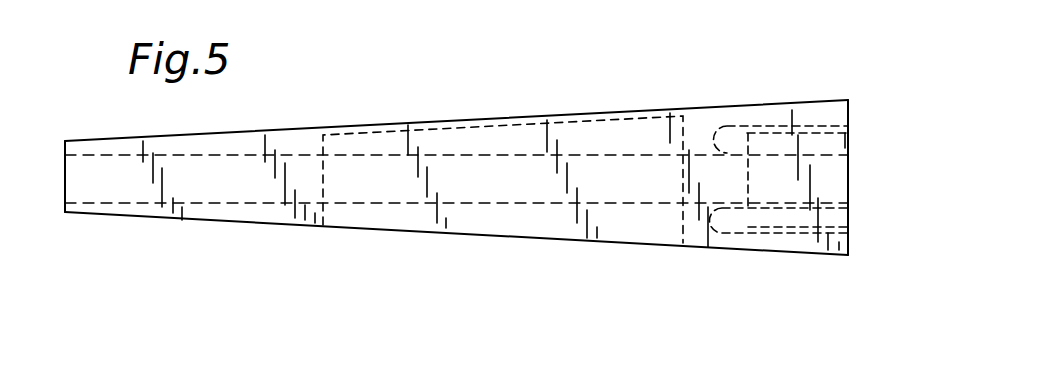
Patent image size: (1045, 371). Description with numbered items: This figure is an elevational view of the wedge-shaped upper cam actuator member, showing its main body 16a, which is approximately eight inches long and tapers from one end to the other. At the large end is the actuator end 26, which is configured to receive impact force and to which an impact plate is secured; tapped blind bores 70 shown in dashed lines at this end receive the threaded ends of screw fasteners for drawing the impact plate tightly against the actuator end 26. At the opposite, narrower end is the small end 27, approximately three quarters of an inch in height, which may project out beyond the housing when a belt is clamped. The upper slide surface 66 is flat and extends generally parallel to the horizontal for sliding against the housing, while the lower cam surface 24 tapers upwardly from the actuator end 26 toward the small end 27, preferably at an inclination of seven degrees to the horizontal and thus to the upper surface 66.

The main body 16a is at (350, 224).
The lower cam surface 24 is at (558, 241).
The actuator end 26 is at (672, 92).
The small end 27 is at (67, 236).
The upper slide surface 66 is at (433, 121).
The tapped blind bores 70 is at (730, 147).